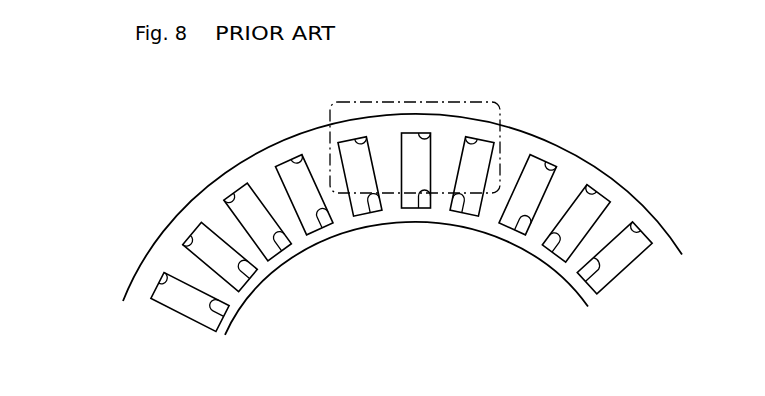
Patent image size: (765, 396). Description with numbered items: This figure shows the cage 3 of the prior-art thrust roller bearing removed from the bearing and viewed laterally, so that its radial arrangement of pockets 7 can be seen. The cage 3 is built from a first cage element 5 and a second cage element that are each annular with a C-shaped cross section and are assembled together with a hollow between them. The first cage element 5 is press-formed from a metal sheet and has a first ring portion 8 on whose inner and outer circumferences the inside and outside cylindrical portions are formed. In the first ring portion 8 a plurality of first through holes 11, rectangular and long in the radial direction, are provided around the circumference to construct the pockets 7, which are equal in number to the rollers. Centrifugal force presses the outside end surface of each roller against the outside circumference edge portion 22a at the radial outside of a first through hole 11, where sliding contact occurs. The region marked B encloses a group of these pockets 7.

The cage 3 is at (548, 136).
The first cage element 5 is at (266, 184).
The pockets 7 is at (402, 135).
The first ring portion 8 is at (338, 205).
The first through holes 11 is at (104, 224).
The outside circumference edge portion 22a is at (300, 165).
The region B is at (512, 125).